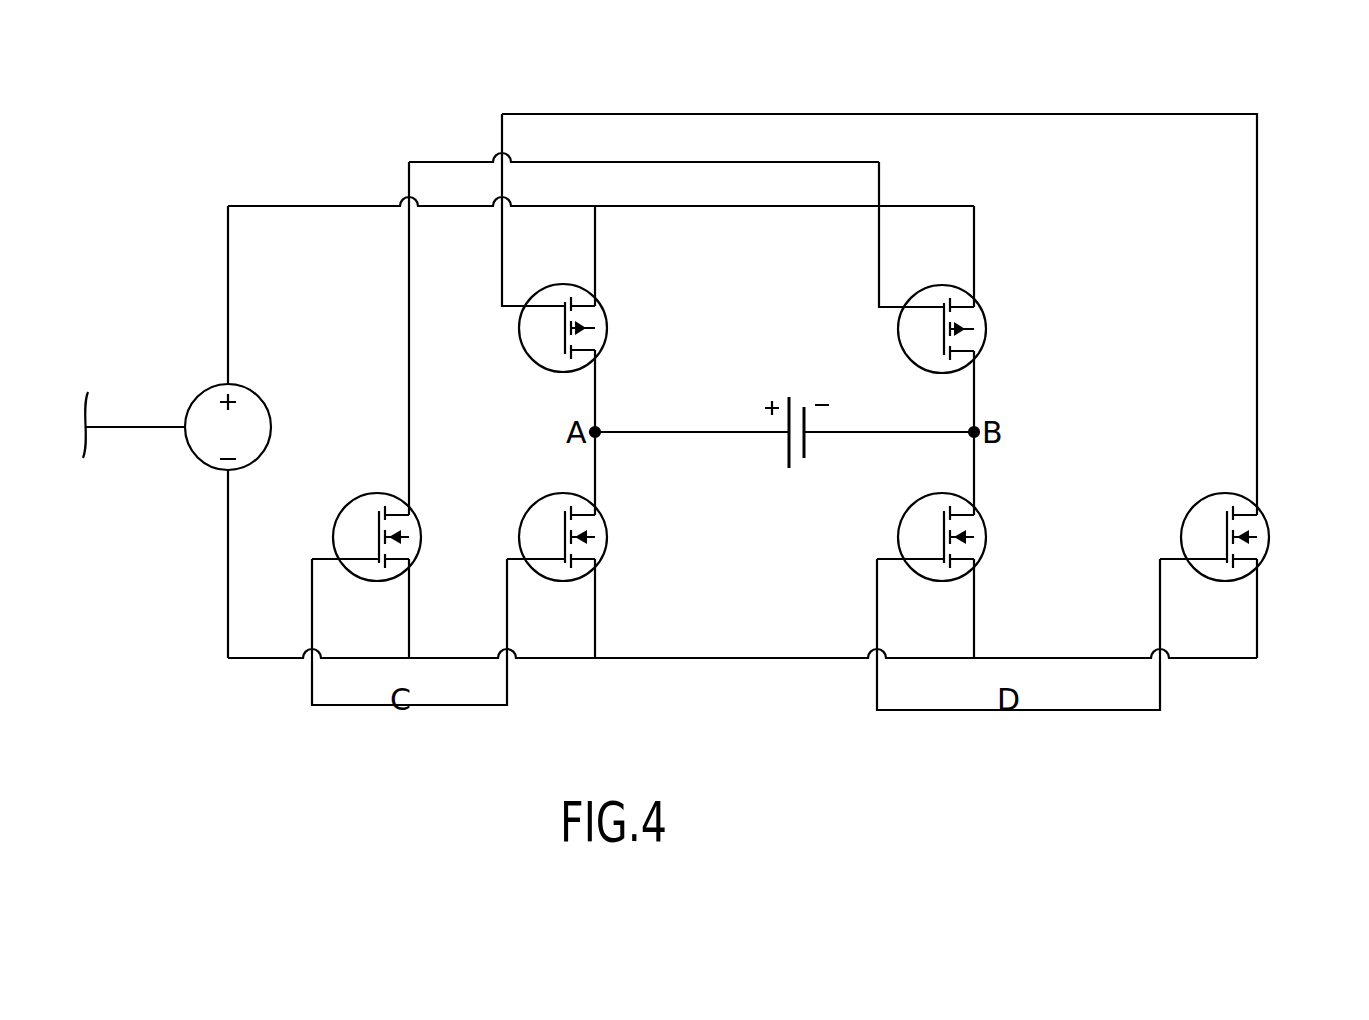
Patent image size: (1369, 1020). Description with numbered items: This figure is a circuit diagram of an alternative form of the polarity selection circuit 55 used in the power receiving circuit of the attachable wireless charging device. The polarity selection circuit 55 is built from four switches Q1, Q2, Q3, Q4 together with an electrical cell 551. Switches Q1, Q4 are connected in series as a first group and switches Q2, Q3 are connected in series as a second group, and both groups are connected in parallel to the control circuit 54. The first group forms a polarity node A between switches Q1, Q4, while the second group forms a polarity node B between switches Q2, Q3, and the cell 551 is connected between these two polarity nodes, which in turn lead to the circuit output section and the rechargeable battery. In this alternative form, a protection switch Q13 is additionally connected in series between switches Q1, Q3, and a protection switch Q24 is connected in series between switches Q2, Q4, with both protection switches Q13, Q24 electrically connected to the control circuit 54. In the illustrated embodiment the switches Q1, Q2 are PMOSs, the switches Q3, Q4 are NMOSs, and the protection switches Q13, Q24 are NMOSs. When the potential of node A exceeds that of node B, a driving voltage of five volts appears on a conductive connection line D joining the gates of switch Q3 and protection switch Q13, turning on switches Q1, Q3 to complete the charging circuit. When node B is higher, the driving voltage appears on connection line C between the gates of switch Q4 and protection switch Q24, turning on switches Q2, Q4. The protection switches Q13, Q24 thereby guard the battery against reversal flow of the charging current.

The control circuit 54 is at (198, 447).
The polarity selection circuit 55 is at (905, 108).
The electrical cell 551 is at (798, 405).
The switch Q1 is at (595, 328).
The switch Q2 is at (974, 329).
The switch Q3 is at (974, 537).
The switch Q4 is at (595, 537).
The protection switch Q13 is at (1257, 537).
The protection switch Q24 is at (409, 537).